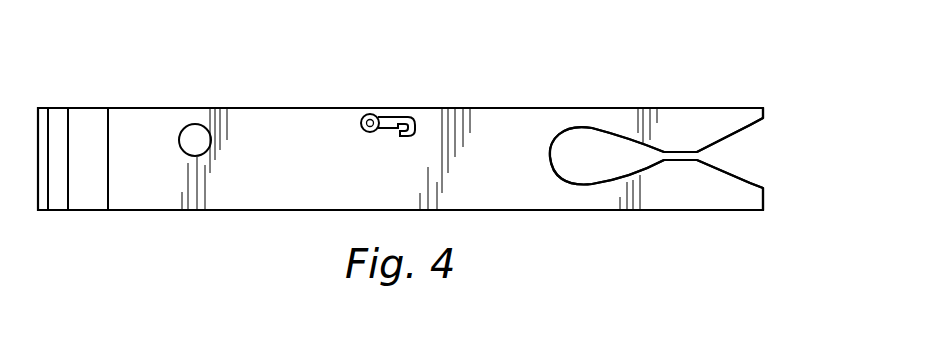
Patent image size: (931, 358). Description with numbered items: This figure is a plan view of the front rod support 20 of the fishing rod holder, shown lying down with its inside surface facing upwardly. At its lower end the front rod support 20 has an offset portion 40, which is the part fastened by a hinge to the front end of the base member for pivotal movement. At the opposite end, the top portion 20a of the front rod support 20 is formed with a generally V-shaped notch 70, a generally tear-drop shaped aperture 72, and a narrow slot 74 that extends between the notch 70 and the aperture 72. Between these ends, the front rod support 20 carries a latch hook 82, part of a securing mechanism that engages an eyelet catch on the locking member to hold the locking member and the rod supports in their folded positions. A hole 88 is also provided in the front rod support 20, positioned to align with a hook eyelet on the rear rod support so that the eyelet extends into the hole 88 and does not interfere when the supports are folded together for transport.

The front rod support 20 is at (124, 72).
The top portion 20a is at (720, 108).
The offset portion 40 is at (88, 213).
The generally V-shaped notch 70 is at (752, 132).
The generally tear-drop shaped aperture 72 is at (590, 130).
The narrow slot 74 is at (669, 152).
The latch hook 82 is at (398, 117).
The hole 88 is at (198, 132).